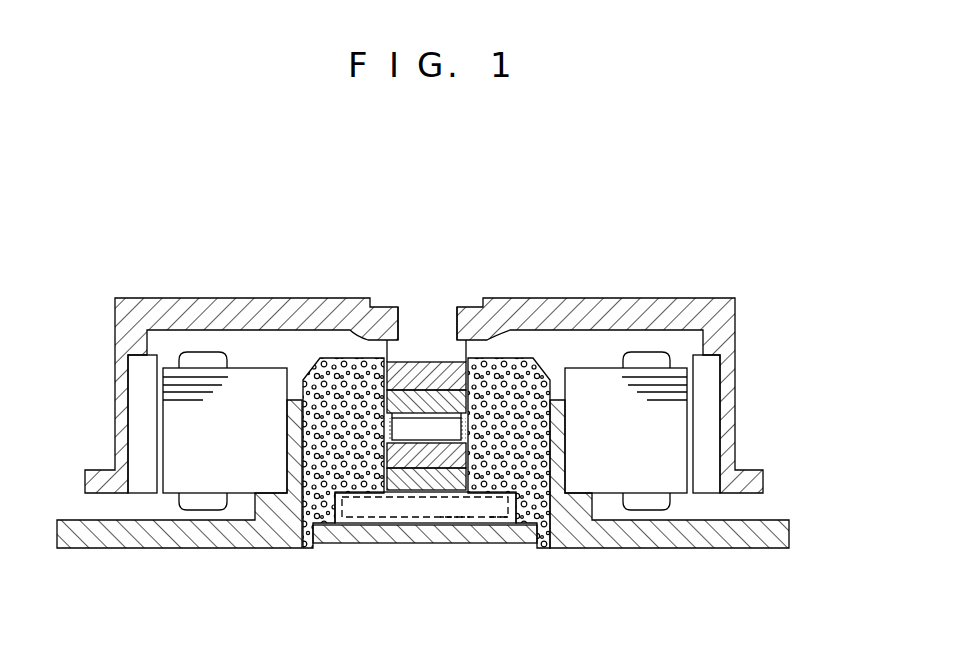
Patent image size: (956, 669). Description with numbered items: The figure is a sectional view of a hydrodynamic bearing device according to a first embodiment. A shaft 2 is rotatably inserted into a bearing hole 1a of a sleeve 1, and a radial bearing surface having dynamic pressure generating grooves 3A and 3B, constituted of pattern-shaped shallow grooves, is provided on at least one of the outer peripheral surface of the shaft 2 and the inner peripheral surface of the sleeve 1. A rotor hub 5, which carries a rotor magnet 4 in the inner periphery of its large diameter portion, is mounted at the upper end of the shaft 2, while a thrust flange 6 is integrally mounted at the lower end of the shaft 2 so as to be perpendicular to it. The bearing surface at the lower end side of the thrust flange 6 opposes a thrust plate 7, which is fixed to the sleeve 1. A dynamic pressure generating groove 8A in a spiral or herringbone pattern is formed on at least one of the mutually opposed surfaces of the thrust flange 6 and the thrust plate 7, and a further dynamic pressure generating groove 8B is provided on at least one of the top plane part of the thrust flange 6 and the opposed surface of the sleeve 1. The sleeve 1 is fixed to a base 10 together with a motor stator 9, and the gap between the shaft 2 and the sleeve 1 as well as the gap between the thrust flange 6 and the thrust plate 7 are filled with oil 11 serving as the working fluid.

The sleeve 1 is at (512, 373).
The bearing hole 1a is at (457, 426).
The shaft 2 is at (415, 353).
The dynamic pressure generating groove 3A is at (375, 380).
The dynamic pressure generating groove 3B is at (402, 478).
The rotor magnet 4 is at (703, 400).
The rotor hub 5 is at (643, 312).
The thrust flange 6 is at (427, 505).
The thrust plate 7 is at (340, 537).
The dynamic pressure generating groove 8A is at (458, 530).
The dynamic pressure generating groove 8B is at (528, 547).
The motor stator 9 is at (643, 474).
The base 10 is at (668, 538).
The oil 11 is at (397, 381).